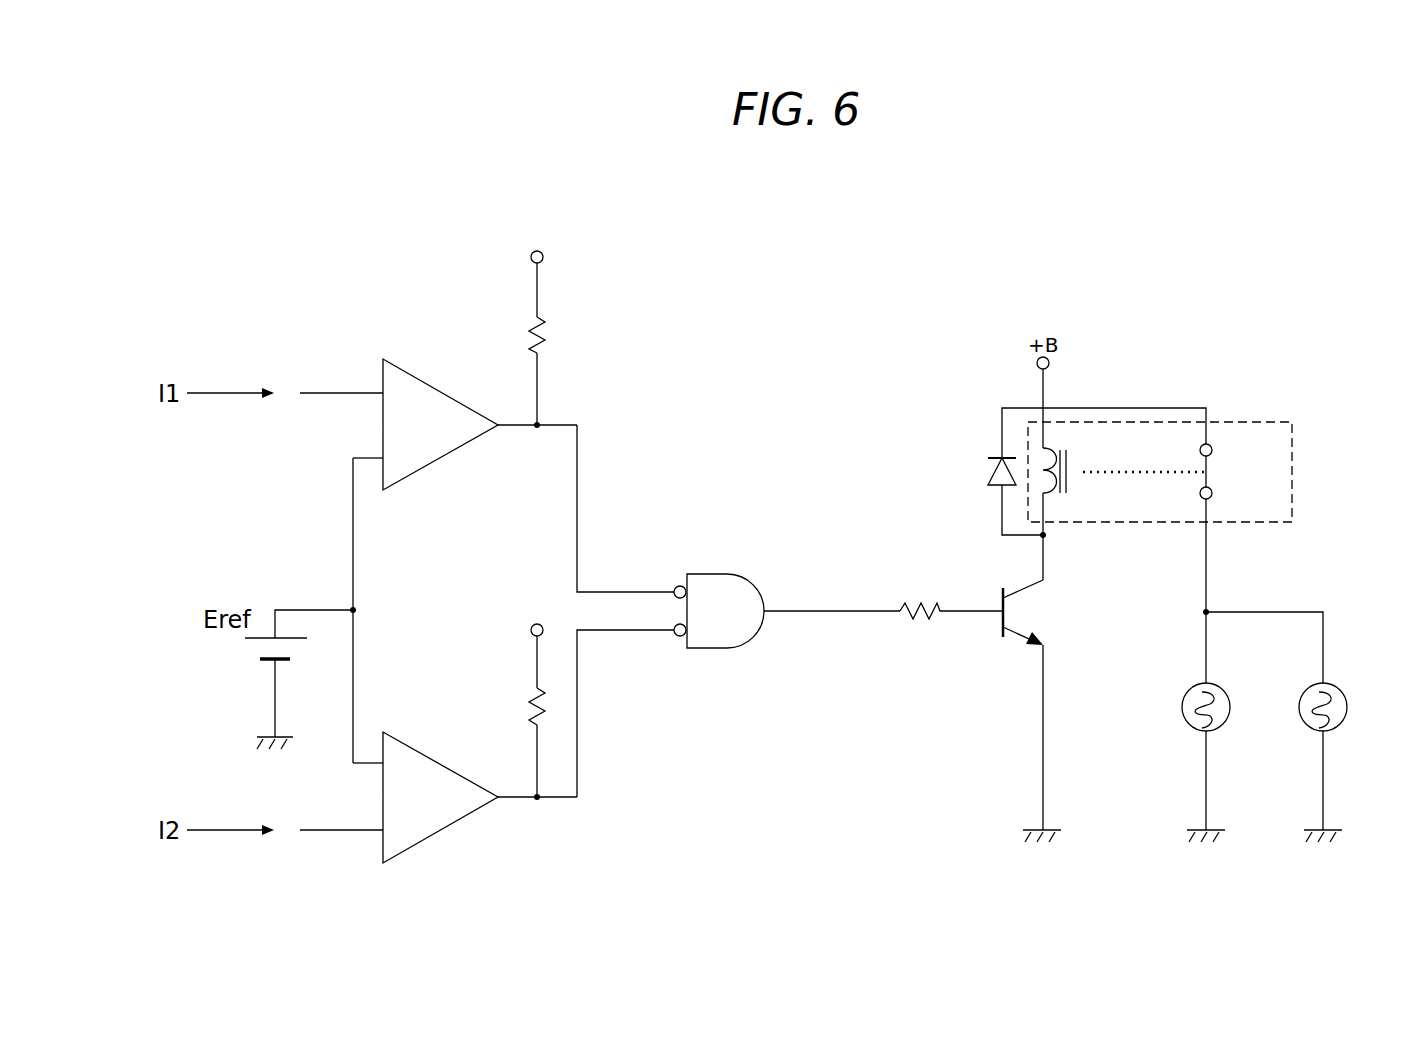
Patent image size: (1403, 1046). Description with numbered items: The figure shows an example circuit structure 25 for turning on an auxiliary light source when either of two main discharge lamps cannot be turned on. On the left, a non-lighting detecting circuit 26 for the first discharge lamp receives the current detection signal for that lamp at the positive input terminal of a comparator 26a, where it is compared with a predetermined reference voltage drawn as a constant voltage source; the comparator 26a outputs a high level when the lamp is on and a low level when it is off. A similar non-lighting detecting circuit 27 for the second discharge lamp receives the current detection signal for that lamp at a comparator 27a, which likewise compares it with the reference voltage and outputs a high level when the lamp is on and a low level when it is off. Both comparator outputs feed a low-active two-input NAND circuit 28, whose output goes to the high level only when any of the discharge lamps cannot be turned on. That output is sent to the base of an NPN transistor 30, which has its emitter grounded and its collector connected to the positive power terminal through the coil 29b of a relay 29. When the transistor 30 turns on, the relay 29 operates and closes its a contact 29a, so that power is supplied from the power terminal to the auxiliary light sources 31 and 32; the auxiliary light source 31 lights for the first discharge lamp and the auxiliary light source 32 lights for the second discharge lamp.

The circuit structure 25 is at (912, 273).
The non-lighting detecting circuit 26 is at (435, 329).
The comparator 26a is at (442, 394).
The non-lighting detecting circuit 27 is at (472, 863).
The comparator 27a is at (441, 766).
The NAND circuit 28 is at (711, 574).
The relay 29 is at (1242, 422).
The a contact 29a is at (1212, 472).
The coil 29b is at (1047, 493).
The NPN transistor 30 is at (1003, 631).
The auxiliary light source 31 is at (1182, 708).
The auxiliary light source 32 is at (1350, 708).